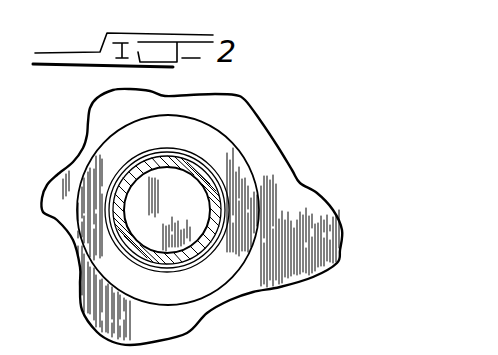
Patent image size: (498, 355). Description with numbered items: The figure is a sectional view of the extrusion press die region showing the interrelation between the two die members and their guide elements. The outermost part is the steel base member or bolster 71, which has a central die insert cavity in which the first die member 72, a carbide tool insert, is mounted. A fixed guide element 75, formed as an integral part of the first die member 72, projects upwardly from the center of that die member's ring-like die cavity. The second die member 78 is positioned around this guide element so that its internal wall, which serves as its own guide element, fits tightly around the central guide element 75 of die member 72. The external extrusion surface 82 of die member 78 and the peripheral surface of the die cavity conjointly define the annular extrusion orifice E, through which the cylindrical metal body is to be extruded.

The bolster 71 is at (303, 200).
The first die member 72 is at (240, 182).
The fixed guide element 75 is at (184, 213).
The die member 78 is at (166, 161).
The external extrusion surface 82 is at (182, 153).
The annular extrusion orifice E is at (211, 244).